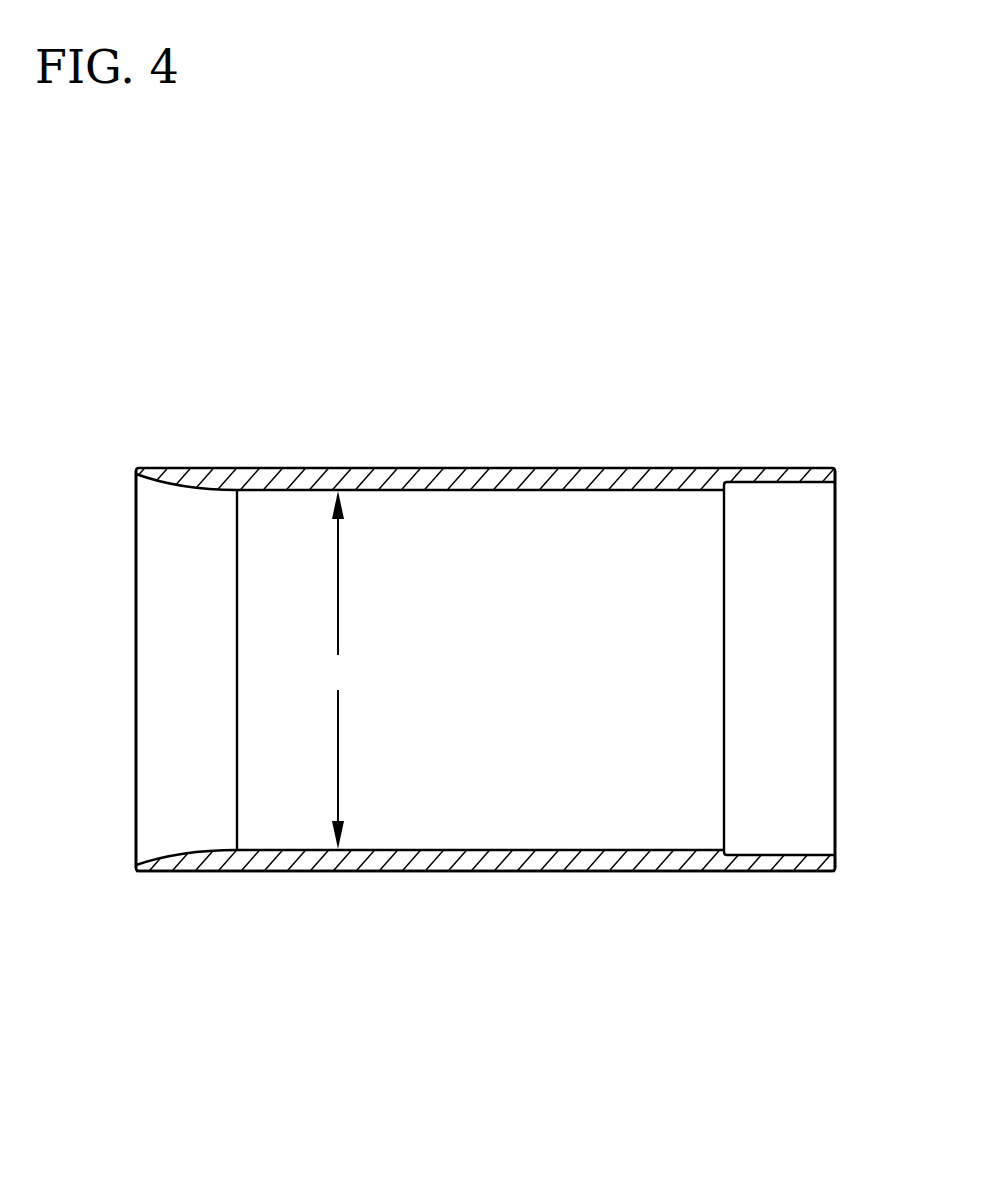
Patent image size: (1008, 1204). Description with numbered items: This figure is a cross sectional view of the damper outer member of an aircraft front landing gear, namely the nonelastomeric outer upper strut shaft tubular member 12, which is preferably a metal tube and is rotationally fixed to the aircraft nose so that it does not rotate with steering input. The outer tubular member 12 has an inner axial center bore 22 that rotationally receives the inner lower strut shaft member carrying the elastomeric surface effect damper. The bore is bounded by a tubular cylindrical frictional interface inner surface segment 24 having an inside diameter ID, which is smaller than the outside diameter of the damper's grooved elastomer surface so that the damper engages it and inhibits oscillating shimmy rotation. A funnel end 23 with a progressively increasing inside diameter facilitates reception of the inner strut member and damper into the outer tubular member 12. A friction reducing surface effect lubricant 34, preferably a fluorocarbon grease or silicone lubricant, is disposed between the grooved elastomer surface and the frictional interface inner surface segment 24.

The nonelastomeric outer upper strut shaft tubular member 12 is at (479, 688).
The inner axial center bore 22 is at (158, 671).
The funnel end 23 is at (182, 852).
The tubular cylindrical frictional interface inner surface segment 24 is at (662, 491).
The surface effect lubricant 34 is at (507, 847).